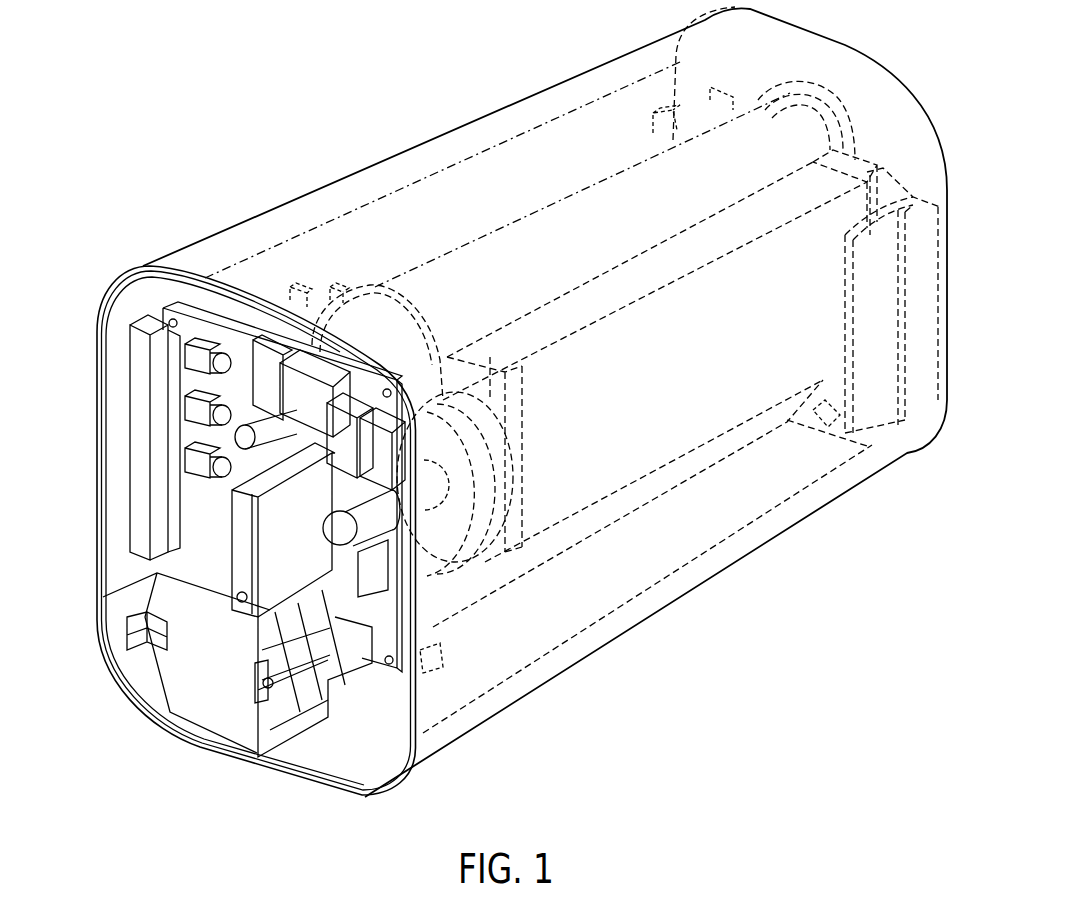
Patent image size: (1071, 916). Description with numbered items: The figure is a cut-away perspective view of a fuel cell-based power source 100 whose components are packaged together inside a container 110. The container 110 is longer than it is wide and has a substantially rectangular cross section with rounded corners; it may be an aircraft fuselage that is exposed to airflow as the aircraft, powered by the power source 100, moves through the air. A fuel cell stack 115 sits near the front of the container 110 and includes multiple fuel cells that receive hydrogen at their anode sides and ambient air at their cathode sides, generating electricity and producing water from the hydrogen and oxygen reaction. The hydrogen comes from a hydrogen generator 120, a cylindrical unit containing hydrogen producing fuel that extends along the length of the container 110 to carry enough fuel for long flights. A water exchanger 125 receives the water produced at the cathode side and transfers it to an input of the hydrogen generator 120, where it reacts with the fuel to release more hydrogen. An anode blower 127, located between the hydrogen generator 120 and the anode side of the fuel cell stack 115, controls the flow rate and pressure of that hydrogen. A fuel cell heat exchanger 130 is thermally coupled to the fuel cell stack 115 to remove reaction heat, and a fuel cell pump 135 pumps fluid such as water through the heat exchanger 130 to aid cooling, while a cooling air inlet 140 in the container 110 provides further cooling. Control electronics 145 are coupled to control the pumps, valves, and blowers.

The fuel cell-based power source 100 is at (341, 102).
The container 110 is at (657, 613).
The fuel cell stack 115 is at (208, 707).
The hydrogen generator 120 is at (580, 224).
The water exchanger 125 is at (700, 420).
The anode blower 127 is at (505, 498).
The fuel cell heat exchanger 130 is at (246, 553).
The fuel cell pump 135 is at (230, 516).
The cooling air inlet 140 is at (160, 440).
The control electronics 145 is at (190, 380).